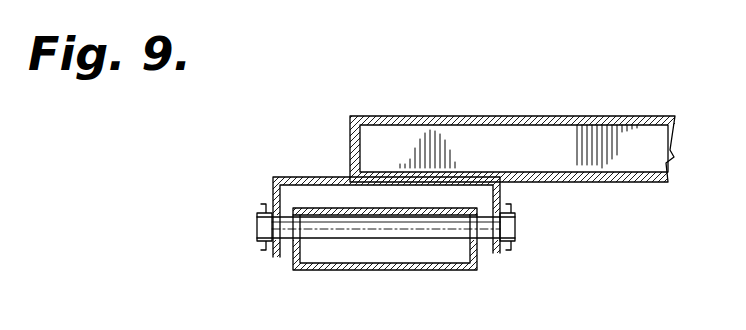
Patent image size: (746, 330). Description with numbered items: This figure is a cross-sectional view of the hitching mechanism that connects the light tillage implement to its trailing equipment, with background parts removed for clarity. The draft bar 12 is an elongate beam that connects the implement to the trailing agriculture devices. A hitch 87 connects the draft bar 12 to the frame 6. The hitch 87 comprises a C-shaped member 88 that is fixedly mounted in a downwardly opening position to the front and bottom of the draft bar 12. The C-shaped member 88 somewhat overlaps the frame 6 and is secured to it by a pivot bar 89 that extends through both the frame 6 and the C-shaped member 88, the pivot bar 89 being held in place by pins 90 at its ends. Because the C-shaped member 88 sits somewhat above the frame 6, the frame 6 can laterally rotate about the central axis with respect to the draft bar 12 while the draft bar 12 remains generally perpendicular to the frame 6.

The draft bar 12 is at (575, 116).
The hitch 87 is at (308, 177).
The C-shaped member 88 is at (500, 185).
The frame 6 is at (443, 268).
The pivot bar 89 is at (393, 228).
The pins 90 is at (264, 249).